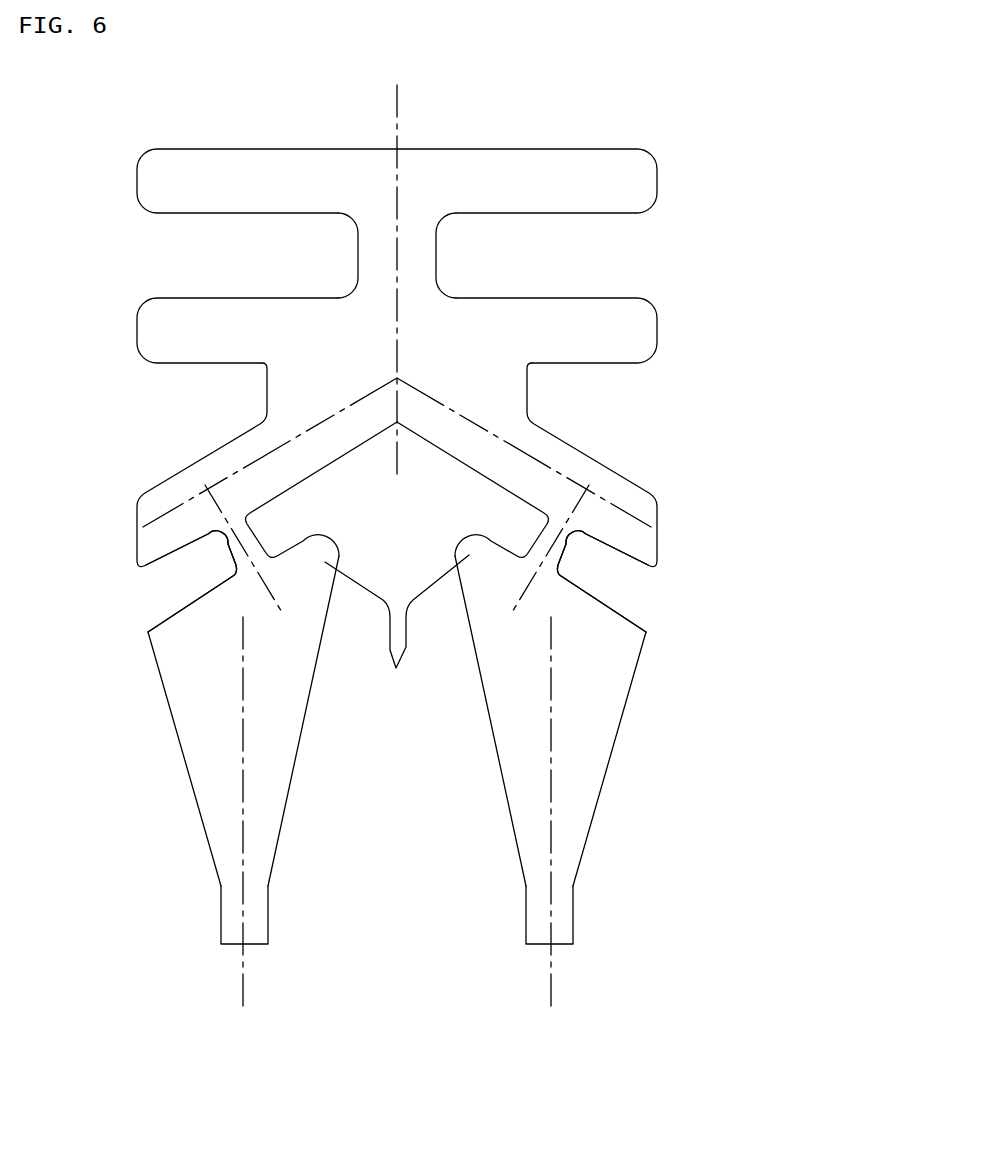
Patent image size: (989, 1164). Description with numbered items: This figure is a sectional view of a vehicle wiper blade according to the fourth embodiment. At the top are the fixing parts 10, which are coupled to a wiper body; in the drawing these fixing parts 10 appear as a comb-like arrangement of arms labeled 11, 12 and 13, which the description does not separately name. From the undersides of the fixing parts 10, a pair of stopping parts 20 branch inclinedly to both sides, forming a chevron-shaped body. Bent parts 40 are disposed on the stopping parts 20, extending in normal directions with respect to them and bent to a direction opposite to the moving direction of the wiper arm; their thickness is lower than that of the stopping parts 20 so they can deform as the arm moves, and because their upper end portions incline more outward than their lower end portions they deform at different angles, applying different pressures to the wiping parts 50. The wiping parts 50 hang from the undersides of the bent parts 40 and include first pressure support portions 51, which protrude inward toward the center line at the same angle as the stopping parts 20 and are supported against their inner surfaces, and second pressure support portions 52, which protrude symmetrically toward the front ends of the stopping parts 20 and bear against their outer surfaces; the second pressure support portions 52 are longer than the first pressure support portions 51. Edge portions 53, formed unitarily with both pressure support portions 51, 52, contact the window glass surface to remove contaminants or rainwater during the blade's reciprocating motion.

The fixing parts 10 is at (501, 256).
The first contact arm 11 is at (613, 187).
The second contact arm 12 is at (457, 330).
The connecting portion 13 is at (593, 267).
The stopping parts 20 is at (670, 507).
The bent parts 40 is at (560, 565).
The wiping parts 50 is at (182, 763).
The first pressure support portions 51 is at (397, 629).
The second pressure support portions 52 is at (178, 658).
The edge portions 53 is at (232, 922).